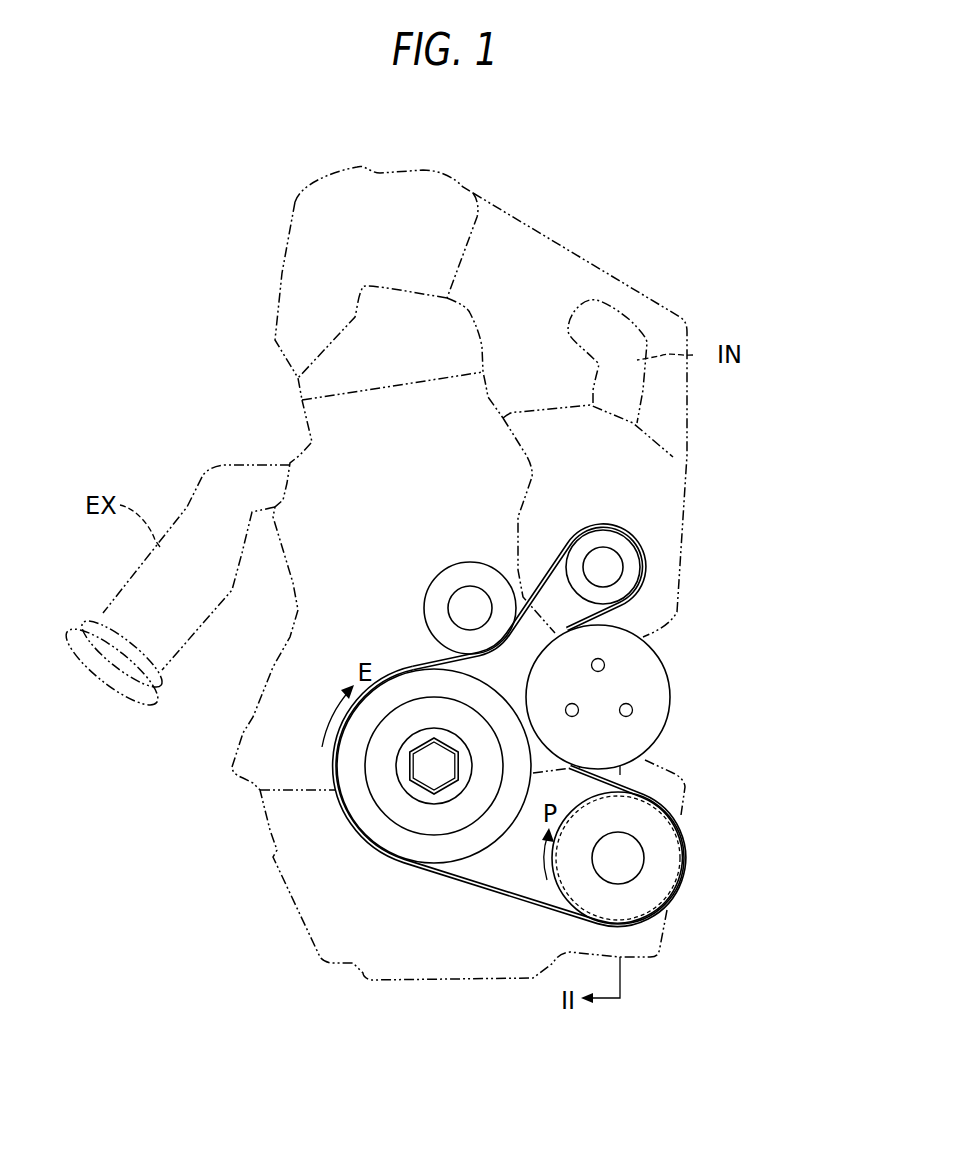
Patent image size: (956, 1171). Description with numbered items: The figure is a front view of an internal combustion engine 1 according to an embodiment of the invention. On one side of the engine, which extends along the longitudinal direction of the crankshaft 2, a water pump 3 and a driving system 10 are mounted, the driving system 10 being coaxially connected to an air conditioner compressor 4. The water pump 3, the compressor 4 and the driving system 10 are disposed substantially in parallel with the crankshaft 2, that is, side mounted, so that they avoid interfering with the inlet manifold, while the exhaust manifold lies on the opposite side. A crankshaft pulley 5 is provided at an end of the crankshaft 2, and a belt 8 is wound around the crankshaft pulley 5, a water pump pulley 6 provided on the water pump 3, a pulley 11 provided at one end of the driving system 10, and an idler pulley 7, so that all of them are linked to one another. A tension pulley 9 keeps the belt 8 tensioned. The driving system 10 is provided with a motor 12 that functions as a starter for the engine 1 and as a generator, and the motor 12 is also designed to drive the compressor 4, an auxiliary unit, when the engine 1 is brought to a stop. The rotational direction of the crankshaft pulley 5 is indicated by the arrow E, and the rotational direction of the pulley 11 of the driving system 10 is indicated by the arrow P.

The internal combustion engine 1 is at (626, 202).
The crankshaft 2 is at (418, 773).
The water pump 3 is at (629, 697).
The air conditioner compressor 4 is at (697, 858).
The crankshaft pulley 5 is at (422, 787).
The water pump pulley 6 is at (668, 705).
The idler pulley 7 is at (632, 565).
The belt 8 is at (518, 897).
The tension pulley 9 is at (448, 578).
The driving system 10 is at (699, 857).
The pulley 11 is at (667, 853).
The motor 12 is at (693, 833).